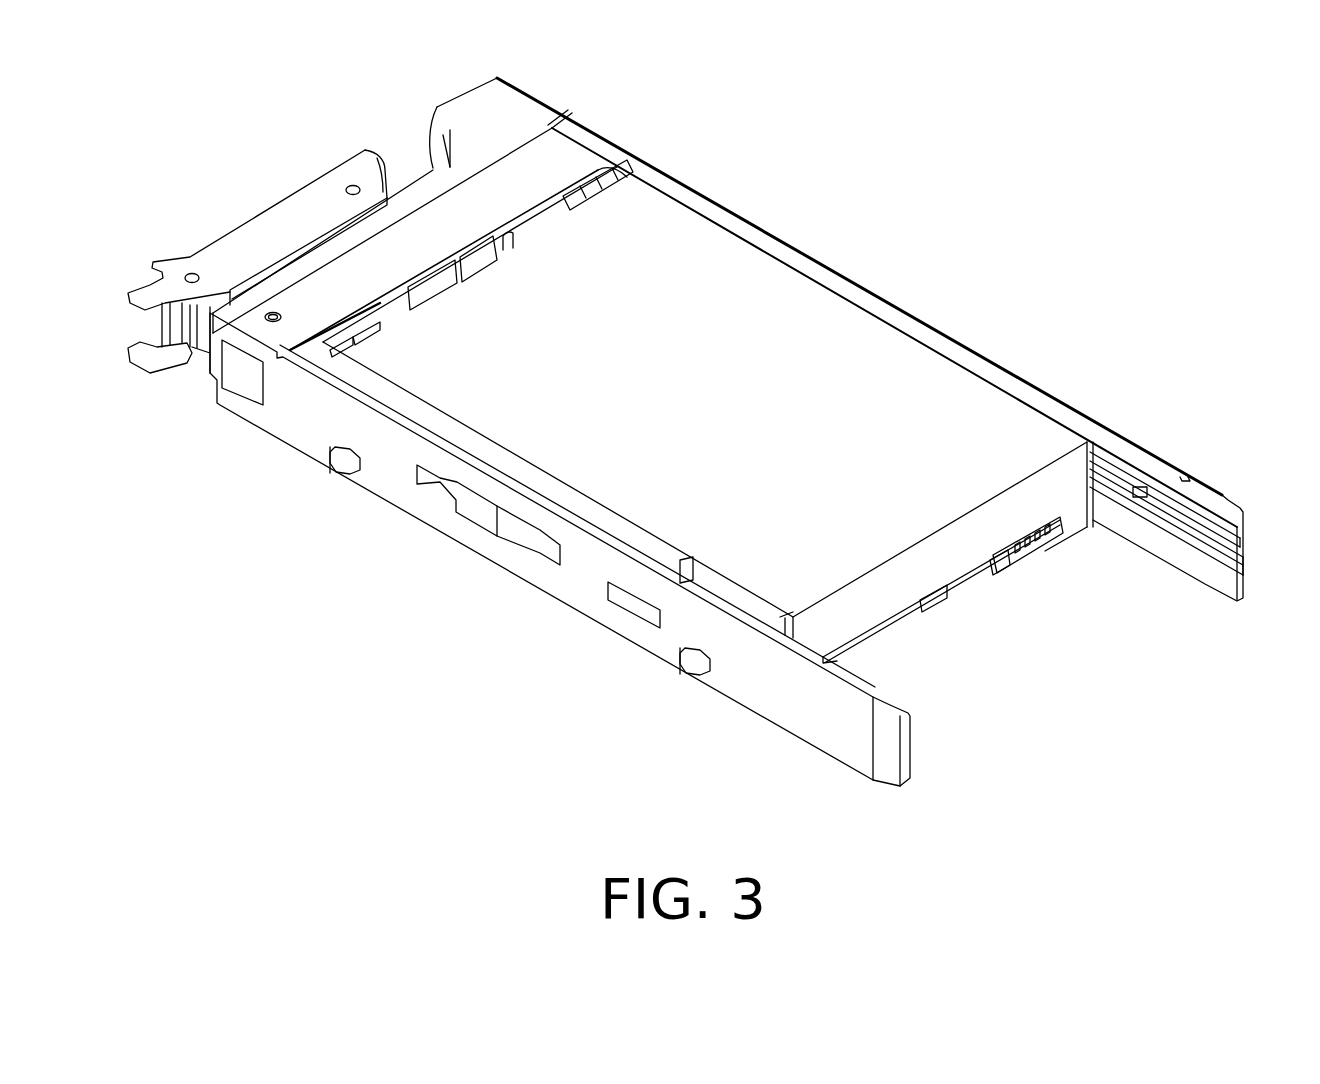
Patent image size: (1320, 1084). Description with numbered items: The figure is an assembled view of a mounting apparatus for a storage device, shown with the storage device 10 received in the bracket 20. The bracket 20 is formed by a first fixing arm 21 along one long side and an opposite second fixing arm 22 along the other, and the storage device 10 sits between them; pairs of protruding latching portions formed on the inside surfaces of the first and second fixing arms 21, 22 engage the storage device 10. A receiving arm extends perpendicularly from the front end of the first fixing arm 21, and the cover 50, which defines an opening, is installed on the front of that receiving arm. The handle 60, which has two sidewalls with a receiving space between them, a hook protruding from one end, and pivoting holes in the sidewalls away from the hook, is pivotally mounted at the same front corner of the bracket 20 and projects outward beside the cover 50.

The storage device 10 is at (730, 345).
The bracket 20 is at (726, 432).
The first fixing arm 21 is at (917, 330).
The second fixing arm 22 is at (393, 485).
The cover 50 is at (490, 128).
The handle 60 is at (307, 216).